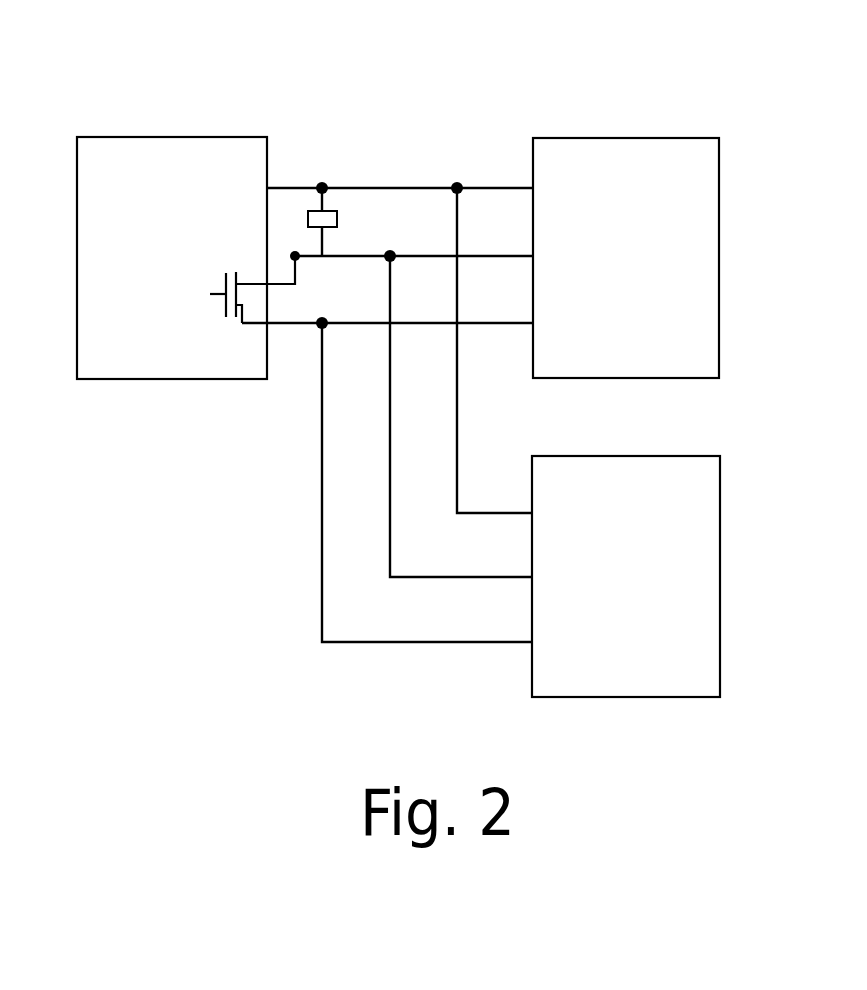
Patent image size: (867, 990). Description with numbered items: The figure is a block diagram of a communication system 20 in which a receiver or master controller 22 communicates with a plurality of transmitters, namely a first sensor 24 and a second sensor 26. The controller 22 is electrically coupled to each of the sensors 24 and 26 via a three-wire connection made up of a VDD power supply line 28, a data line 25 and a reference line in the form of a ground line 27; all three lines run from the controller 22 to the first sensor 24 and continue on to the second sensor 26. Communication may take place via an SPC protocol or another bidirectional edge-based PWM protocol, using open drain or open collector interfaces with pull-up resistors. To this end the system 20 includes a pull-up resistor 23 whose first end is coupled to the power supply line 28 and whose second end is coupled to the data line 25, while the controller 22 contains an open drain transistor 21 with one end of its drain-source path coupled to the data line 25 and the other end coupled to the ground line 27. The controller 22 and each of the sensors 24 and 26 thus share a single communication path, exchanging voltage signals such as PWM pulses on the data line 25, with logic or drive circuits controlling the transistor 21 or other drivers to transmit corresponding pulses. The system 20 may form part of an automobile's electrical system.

The system 20 is at (319, 89).
The open drain transistor 21 is at (223, 282).
The controller 22 is at (100, 137).
The pull-up resistor 23 is at (339, 227).
The first sensor 24 is at (617, 138).
The data line 25 is at (403, 257).
The second sensor 26 is at (573, 456).
The ground line 27 is at (398, 323).
The VDD power supply line 28 is at (294, 188).